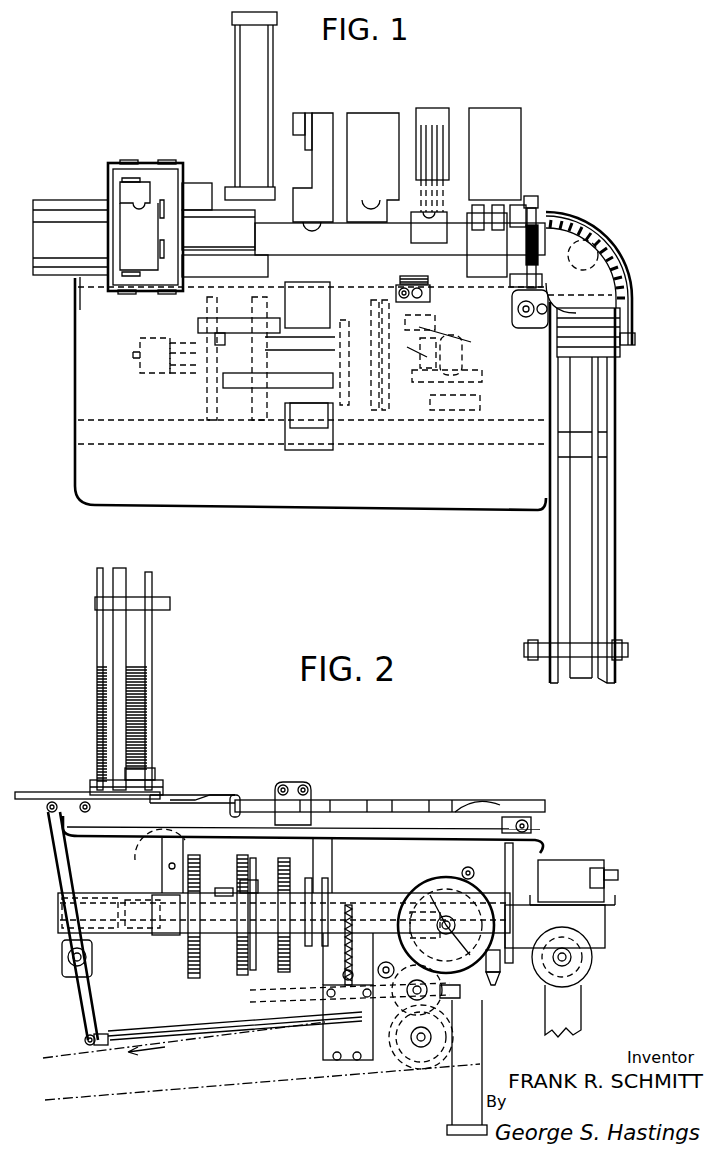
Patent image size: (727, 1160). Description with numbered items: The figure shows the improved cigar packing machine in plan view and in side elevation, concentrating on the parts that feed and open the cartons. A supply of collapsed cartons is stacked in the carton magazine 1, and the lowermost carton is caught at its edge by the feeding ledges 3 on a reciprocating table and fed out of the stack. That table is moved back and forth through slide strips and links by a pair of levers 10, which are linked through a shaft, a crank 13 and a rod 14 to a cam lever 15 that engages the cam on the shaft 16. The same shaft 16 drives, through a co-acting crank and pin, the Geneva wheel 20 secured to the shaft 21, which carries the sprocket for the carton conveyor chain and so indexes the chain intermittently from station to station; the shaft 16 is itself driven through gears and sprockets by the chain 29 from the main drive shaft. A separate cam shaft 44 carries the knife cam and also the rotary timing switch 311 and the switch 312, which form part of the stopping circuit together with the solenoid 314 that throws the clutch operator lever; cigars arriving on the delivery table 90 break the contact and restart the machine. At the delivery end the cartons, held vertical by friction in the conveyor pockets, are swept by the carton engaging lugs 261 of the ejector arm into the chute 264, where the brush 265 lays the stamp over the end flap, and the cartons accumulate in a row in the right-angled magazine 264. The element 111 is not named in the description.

In FIG. 2, the carton magazine 1 is at (145, 637).
In FIG. 1, the feeding ledges 3 is at (65, 278).
In FIG. 2, the feeding ledges 3 is at (38, 802).
In FIG. 2, the levers 10 is at (58, 877).
In FIG. 2, the crank 13 is at (75, 1006).
In FIG. 2, the rod 14 is at (195, 1028).
In FIG. 2, the cam lever 15 is at (455, 991).
In FIG. 1, the shaft 16 is at (470, 374).
In FIG. 2, the shaft 16 is at (493, 972).
In FIG. 2, the Geneva wheel 20 is at (466, 870).
In FIG. 2, the shaft 21 is at (462, 876).
In FIG. 2, the chain 29 is at (290, 1079).
In FIG. 1, the cam shaft 44 is at (392, 370).
In FIG. 2, the cam shaft 44 is at (233, 925).
In FIG. 1, the delivery table 90 is at (441, 512).
In FIG. 2, the delivery table 90 is at (110, 820).
In FIG. 1, the shaft slide 111 is at (228, 385).
In FIG. 1, the carton engaging lugs 261 is at (528, 228).
In FIG. 1, the chute 264 is at (565, 542).
In FIG. 1, the brush 265 is at (578, 222).
In FIG. 1, the rotary timing switch 311 is at (150, 352).
In FIG. 1, the switch 312 is at (163, 350).
In FIG. 2, the solenoid 314 is at (326, 1040).